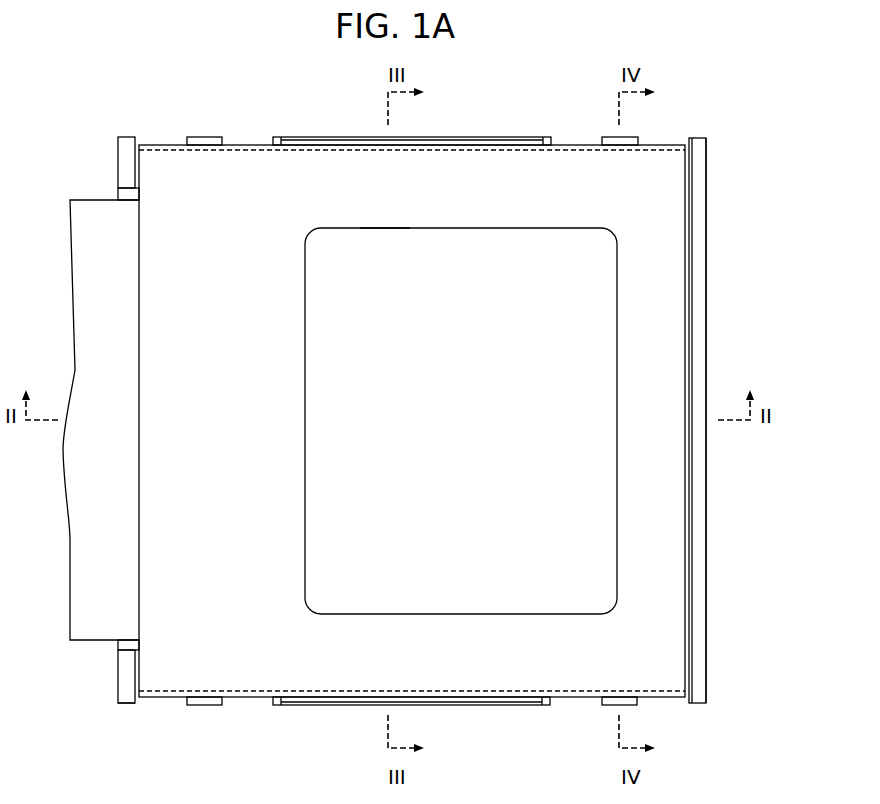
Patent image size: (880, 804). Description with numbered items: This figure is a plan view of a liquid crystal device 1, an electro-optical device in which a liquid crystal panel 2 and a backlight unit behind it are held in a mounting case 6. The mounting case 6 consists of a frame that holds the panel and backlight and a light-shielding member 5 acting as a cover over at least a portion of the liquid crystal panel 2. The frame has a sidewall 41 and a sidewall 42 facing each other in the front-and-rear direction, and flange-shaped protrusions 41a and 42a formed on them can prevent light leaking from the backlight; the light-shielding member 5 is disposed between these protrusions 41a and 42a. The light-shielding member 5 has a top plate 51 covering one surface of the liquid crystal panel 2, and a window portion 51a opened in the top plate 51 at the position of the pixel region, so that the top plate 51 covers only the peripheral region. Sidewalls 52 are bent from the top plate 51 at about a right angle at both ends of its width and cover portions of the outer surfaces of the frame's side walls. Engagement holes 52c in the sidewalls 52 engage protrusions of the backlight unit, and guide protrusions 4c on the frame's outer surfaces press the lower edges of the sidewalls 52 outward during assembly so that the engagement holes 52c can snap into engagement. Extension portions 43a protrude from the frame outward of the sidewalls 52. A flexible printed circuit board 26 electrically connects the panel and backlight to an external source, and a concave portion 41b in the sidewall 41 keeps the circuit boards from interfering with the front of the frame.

The liquid crystal device 1 is at (160, 138).
The liquid crystal panel 2 is at (592, 538).
The guide protrusions 4c is at (205, 138).
The light-shielding member 5 is at (520, 186).
The mounting case 6 is at (160, 712).
The flexible printed circuit board 26 is at (86, 542).
The sidewall 41 is at (97, 441).
The protrusion 41a is at (126, 700).
The concave portion 41b is at (122, 194).
The sidewall 42 is at (698, 235).
The protrusion 42a is at (697, 150).
The extension portions 43a is at (458, 140).
The top plate 51 is at (476, 650).
The window portion 51a is at (385, 238).
The sidewalls 52 is at (392, 423).
The engagement holes 52c is at (518, 734).